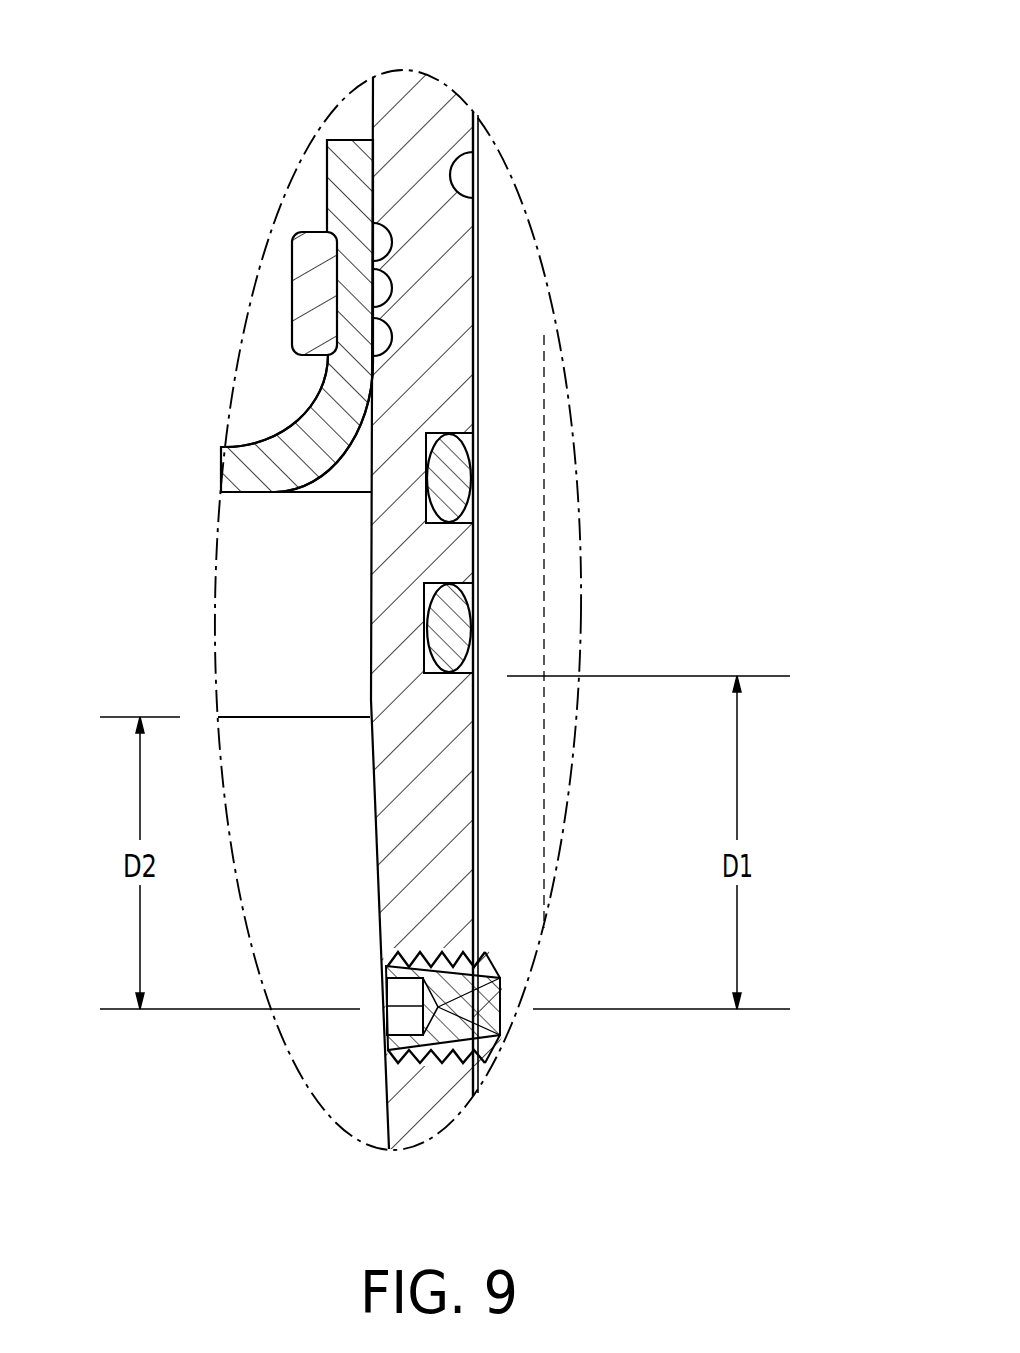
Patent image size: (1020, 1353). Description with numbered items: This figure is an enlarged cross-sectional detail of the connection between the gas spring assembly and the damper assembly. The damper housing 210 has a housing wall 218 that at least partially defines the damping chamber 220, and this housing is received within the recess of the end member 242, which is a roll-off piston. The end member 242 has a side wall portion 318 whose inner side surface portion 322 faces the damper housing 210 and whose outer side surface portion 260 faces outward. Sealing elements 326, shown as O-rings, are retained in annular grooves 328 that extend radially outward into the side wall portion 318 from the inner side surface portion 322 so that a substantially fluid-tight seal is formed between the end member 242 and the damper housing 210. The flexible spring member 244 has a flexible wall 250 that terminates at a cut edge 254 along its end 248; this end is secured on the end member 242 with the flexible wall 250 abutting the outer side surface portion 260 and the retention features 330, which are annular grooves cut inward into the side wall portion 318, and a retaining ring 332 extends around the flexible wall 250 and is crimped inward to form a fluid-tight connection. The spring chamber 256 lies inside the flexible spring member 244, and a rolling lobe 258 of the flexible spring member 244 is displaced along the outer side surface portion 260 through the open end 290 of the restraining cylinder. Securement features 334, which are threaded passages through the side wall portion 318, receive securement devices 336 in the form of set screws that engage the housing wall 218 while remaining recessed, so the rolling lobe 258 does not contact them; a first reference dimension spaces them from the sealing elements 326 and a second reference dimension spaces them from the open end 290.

The damper housing 210 is at (467, 813).
The housing wall 218 is at (515, 758).
The damping chamber 220 is at (582, 560).
The end member 242 is at (373, 762).
The flexible spring member 244 is at (326, 160).
The end of flexible spring member 248 is at (298, 108).
The flexible wall 250 is at (352, 190).
The cut edge 254 is at (350, 138).
The spring chamber 256 is at (290, 407).
The rolling lobe 258 is at (253, 476).
The outer side surface portion 260 is at (370, 565).
The open end of restraining cylinder 290 is at (258, 716).
The side wall portion 318 is at (428, 100).
The inner side surface portion 322 is at (470, 152).
The sealing elements 326 is at (467, 470).
The annular grooves 328 is at (425, 510).
The retention features 330 is at (397, 340).
The retaining ring 332 is at (300, 300).
The securement features 334 is at (413, 952).
The securement devices 336 is at (490, 1045).